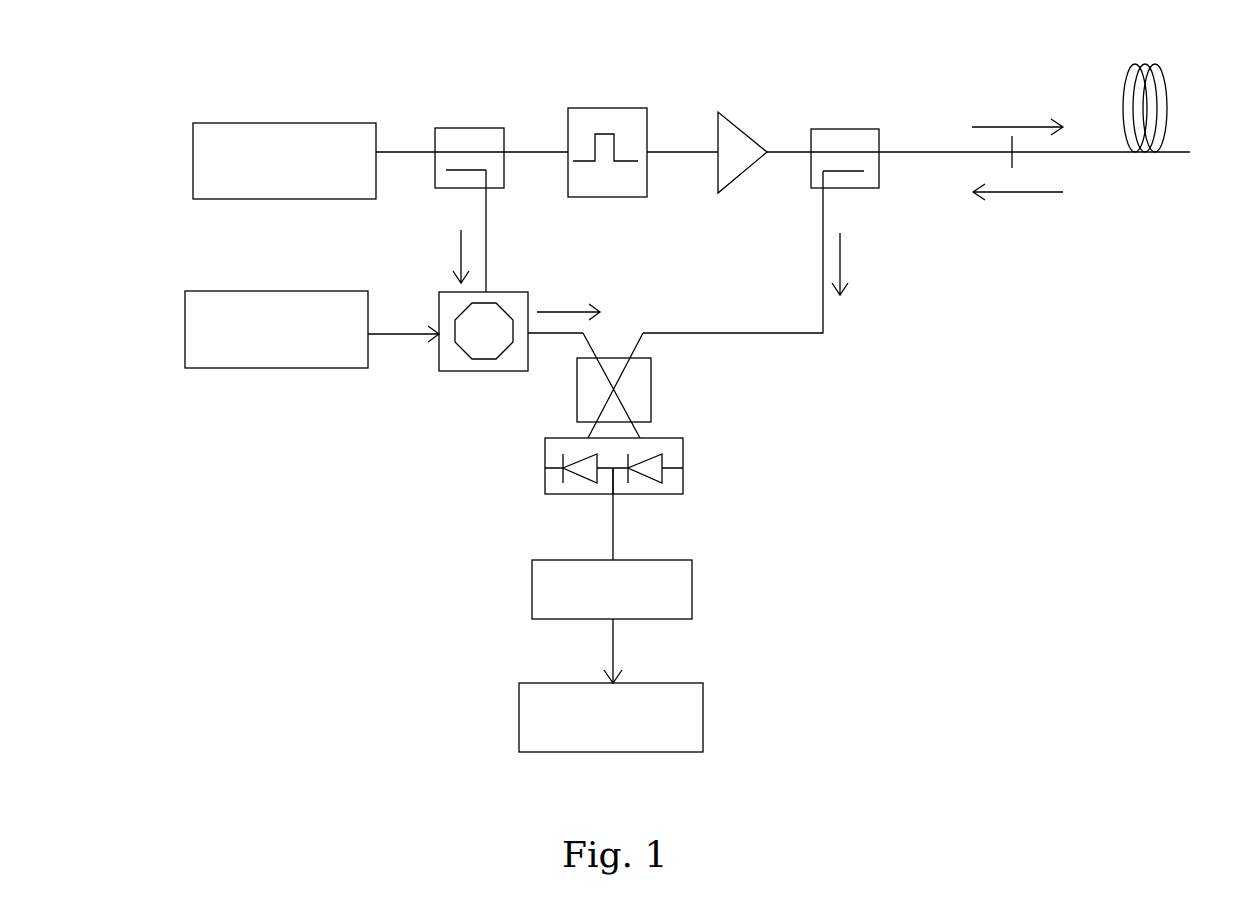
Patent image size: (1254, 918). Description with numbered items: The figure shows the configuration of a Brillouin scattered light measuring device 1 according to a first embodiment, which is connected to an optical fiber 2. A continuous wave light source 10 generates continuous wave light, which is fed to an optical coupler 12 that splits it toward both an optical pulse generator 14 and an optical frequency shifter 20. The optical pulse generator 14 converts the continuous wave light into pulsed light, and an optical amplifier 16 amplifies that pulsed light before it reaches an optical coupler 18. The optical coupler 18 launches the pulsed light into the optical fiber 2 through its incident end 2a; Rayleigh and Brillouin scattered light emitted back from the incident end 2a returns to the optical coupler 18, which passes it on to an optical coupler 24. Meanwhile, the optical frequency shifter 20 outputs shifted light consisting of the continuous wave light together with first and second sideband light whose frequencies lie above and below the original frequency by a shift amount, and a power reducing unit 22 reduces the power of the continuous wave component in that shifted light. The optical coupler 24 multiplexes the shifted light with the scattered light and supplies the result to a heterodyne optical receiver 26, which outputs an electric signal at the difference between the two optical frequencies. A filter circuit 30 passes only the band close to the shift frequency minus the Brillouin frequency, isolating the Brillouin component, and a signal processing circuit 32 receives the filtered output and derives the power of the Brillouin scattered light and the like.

The Brillouin scattered light measuring device 1 is at (170, 107).
The optical fiber 2 is at (1167, 90).
The incident end 2a is at (1014, 148).
The continuous wave light source 10 is at (333, 123).
The optical coupler 12 is at (504, 175).
The optical pulse generator 14 is at (592, 197).
The optical amplifier 16 is at (740, 175).
The optical coupler 18 is at (879, 170).
The optical frequency shifter 20 is at (496, 292).
The power reducing unit 22 is at (305, 291).
The optical coupler 24 is at (651, 378).
The heterodyne optical receiver 26 is at (545, 470).
The filter circuit 30 is at (532, 590).
The signal processing circuit 32 is at (537, 683).